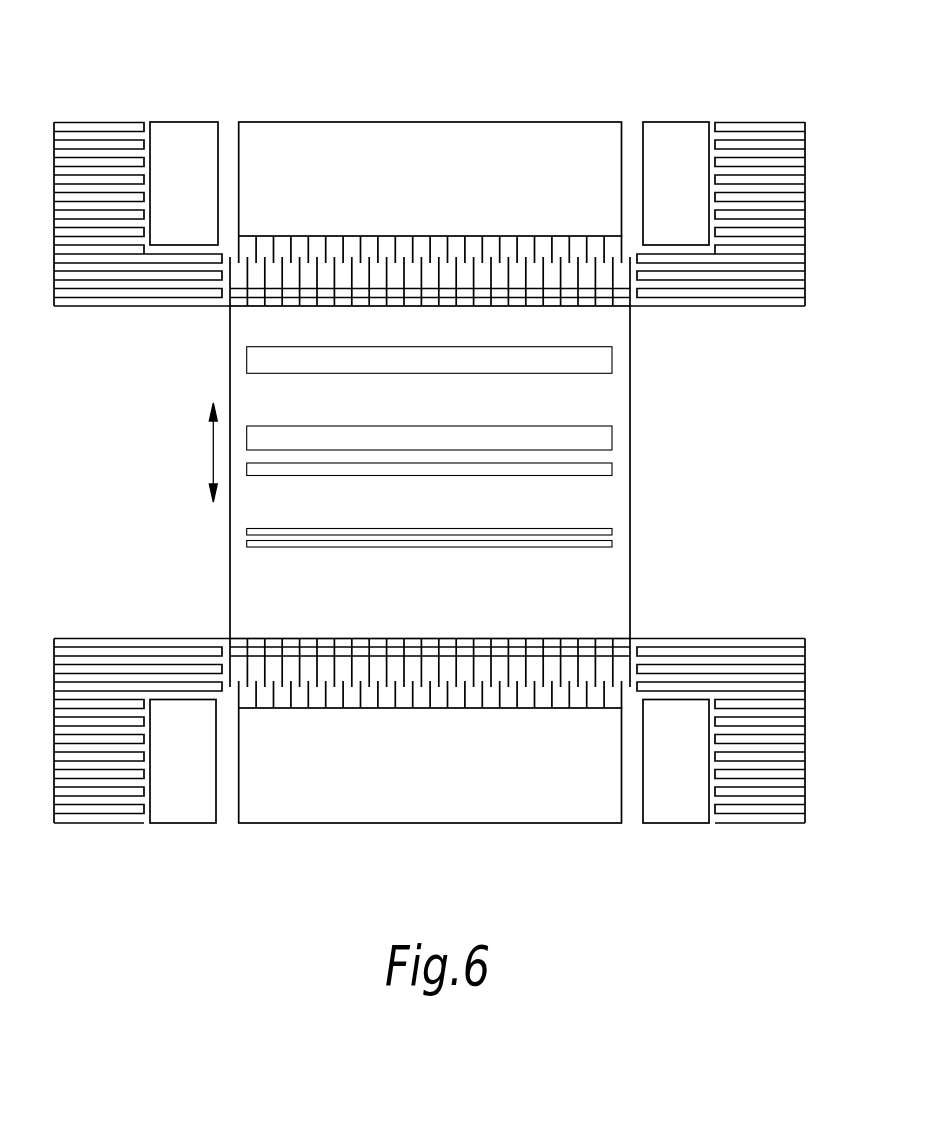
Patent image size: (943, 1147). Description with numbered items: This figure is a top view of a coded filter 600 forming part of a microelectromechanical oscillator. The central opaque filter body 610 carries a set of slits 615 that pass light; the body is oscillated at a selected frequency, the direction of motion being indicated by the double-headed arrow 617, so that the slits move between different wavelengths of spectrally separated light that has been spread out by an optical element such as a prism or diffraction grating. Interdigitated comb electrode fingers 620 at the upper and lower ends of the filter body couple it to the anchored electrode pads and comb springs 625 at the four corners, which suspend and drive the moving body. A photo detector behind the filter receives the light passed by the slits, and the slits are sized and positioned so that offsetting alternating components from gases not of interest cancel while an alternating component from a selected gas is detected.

The MEMS resonator device 600 is at (111, 38).
The resonator body (proof mass) 610 is at (610, 602).
The slots / openings in resonator body 615 is at (580, 359).
The direction of motion 617 is at (212, 453).
The interdigitated comb electrode fingers 620 is at (613, 278).
The anchor / electrode pads with comb springs 625 is at (101, 122).